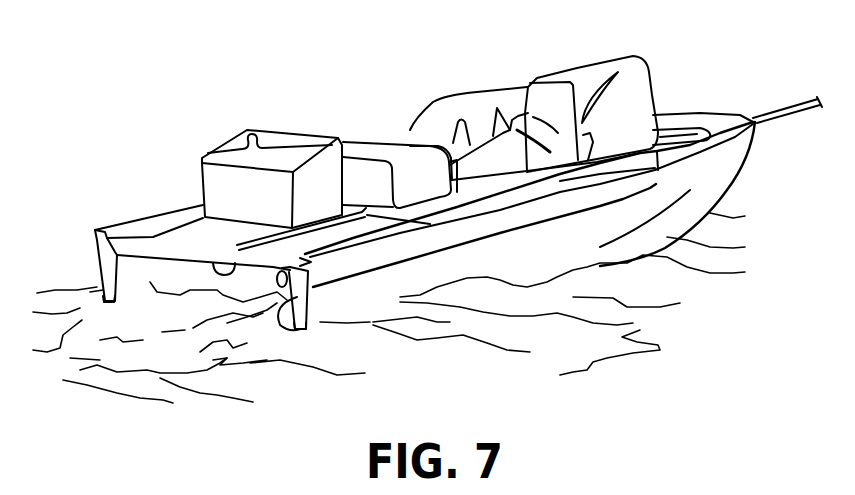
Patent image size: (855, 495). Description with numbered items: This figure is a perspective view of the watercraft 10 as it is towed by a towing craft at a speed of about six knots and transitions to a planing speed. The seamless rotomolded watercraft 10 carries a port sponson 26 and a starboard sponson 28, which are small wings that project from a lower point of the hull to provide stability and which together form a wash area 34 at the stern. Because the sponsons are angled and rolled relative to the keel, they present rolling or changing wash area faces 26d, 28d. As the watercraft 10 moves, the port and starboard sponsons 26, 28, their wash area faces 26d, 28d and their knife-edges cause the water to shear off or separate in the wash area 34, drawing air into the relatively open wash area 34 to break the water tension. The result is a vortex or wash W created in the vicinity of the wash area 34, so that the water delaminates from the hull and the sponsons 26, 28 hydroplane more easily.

The watercraft 10 is at (376, 86).
The port sponson 26 is at (123, 273).
The wash area face of port sponson 26d is at (157, 287).
The starboard sponson 28 is at (311, 262).
The wash area face of starboard sponson 28d is at (299, 334).
The wash area 34 is at (235, 263).
The wash W is at (389, 308).